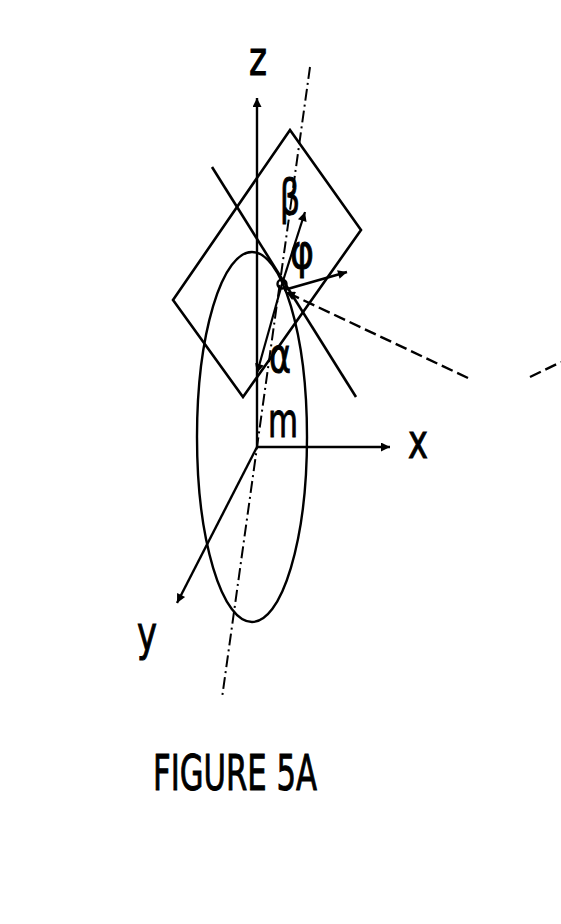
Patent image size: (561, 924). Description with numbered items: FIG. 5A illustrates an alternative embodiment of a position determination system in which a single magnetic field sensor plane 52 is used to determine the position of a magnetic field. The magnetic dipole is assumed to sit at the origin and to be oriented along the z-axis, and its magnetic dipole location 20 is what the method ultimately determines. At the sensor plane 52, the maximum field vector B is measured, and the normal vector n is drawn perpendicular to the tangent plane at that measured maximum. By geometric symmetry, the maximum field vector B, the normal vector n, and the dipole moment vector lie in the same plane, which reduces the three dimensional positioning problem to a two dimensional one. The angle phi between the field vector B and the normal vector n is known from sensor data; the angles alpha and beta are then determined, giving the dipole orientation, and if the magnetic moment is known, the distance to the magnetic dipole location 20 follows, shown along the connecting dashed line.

The magnetic field sensor plane 52 is at (207, 255).
The magnetic dipole location 20 is at (423, 364).
The maximum field vector B is at (339, 285).
The normal vector n is at (305, 227).